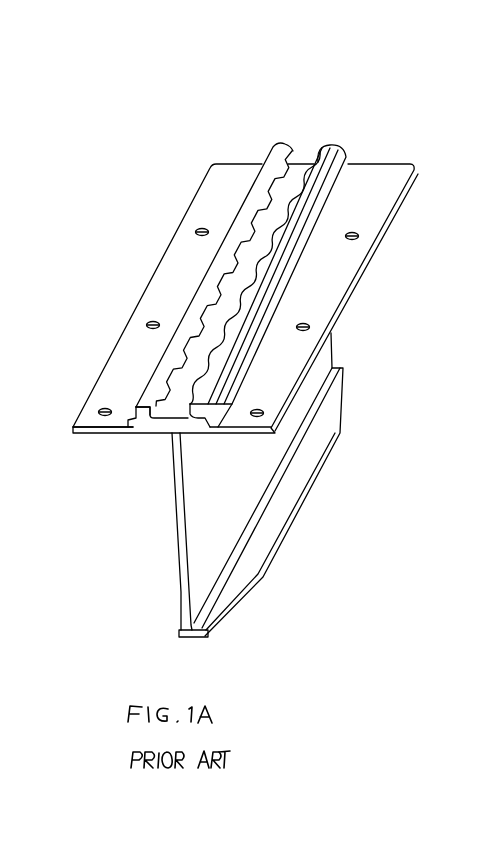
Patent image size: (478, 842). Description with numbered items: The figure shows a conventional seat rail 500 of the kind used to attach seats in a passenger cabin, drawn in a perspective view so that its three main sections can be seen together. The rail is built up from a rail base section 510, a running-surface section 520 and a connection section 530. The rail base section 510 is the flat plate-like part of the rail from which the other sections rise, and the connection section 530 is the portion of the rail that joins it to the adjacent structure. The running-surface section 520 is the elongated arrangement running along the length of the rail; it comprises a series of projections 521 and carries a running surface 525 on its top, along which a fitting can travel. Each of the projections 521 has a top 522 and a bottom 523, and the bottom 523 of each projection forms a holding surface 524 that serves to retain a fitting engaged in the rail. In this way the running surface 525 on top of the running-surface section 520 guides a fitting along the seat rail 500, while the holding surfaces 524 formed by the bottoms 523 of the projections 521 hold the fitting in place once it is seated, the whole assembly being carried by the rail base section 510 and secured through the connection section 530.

The seat rail 500 is at (116, 155).
The rail base section 510 is at (347, 309).
The running-surface section 520 is at (142, 422).
The projections 521 is at (293, 163).
The top 522 is at (201, 399).
The bottom 523 is at (166, 534).
The holding surface 524 is at (184, 432).
The running surface 525 is at (282, 150).
The connection section 530 is at (133, 428).